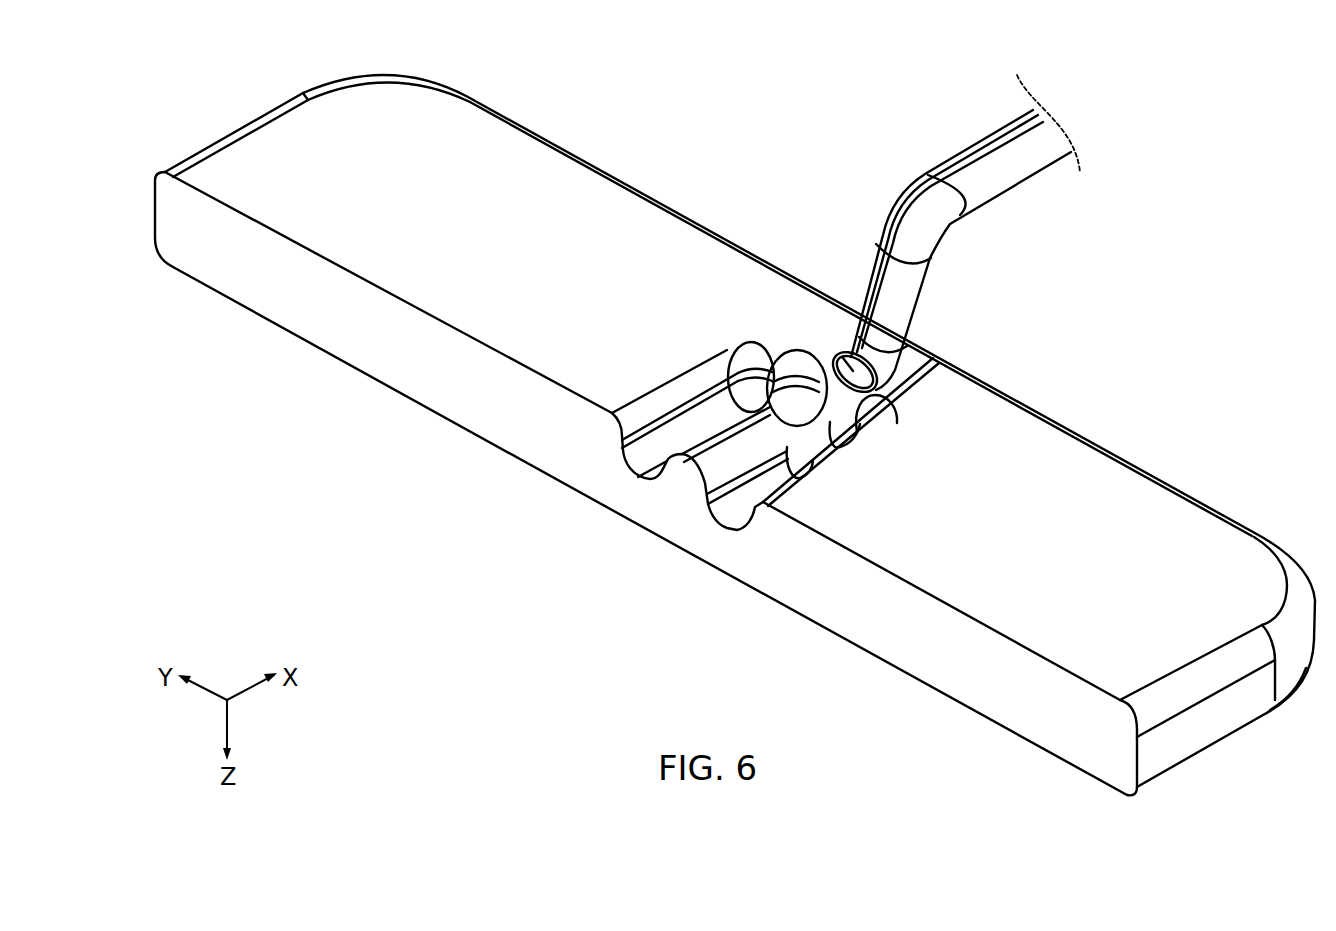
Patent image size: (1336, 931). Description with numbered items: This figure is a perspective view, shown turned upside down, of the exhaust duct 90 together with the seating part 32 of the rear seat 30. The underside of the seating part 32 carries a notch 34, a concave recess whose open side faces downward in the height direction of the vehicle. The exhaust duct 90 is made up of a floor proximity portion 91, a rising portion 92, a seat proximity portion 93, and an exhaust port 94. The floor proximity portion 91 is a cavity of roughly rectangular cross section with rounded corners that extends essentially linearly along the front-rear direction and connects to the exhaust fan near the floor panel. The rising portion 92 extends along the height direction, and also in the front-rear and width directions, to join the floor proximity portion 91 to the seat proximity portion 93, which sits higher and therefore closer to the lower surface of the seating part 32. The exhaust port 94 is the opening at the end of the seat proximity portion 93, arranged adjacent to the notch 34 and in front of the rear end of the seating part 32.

The rear seat 30 is at (596, 156).
The seating part 32 is at (643, 222).
The notch 34 is at (925, 356).
The exhaust duct 90 is at (917, 237).
The floor proximity portion 91 is at (955, 163).
The rising portion 92 is at (889, 262).
The seat proximity portion 93 is at (858, 330).
The exhaust port 94 is at (842, 324).